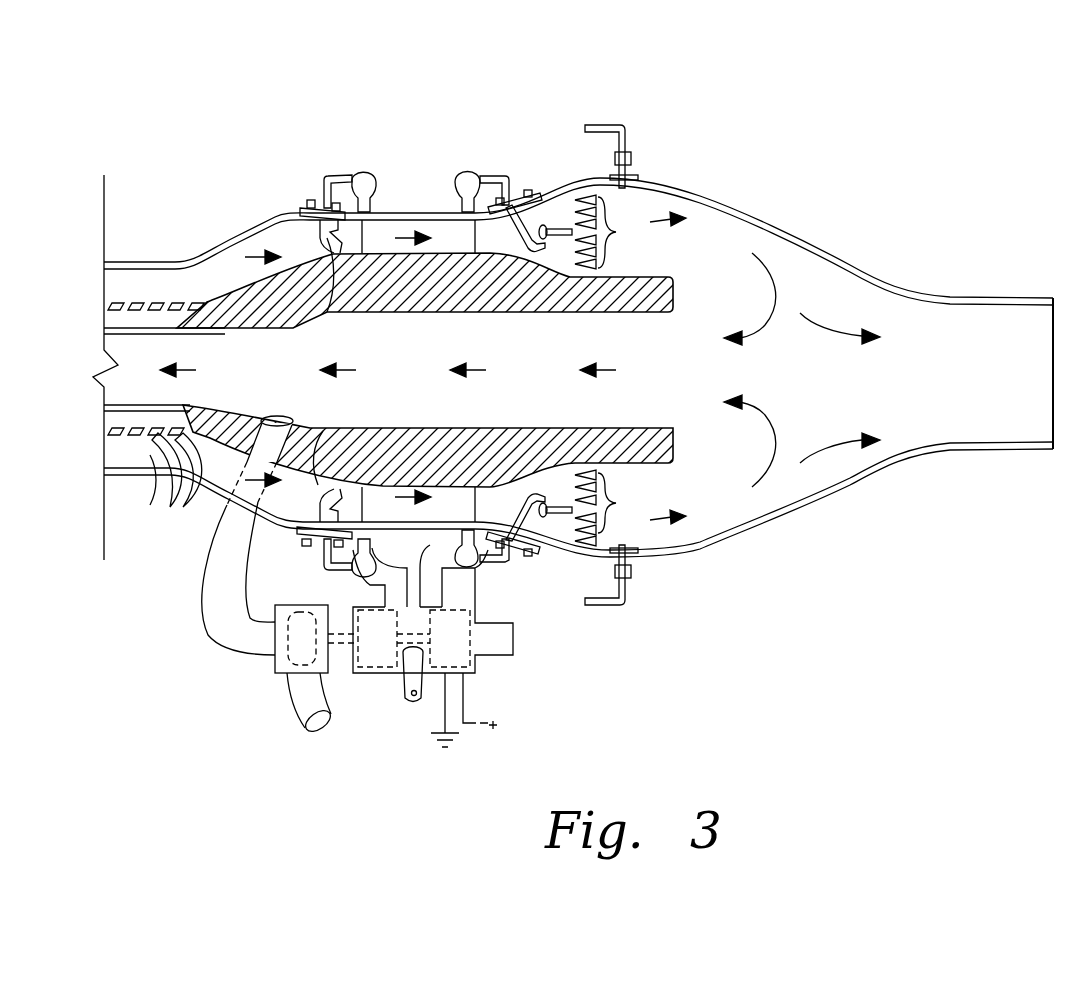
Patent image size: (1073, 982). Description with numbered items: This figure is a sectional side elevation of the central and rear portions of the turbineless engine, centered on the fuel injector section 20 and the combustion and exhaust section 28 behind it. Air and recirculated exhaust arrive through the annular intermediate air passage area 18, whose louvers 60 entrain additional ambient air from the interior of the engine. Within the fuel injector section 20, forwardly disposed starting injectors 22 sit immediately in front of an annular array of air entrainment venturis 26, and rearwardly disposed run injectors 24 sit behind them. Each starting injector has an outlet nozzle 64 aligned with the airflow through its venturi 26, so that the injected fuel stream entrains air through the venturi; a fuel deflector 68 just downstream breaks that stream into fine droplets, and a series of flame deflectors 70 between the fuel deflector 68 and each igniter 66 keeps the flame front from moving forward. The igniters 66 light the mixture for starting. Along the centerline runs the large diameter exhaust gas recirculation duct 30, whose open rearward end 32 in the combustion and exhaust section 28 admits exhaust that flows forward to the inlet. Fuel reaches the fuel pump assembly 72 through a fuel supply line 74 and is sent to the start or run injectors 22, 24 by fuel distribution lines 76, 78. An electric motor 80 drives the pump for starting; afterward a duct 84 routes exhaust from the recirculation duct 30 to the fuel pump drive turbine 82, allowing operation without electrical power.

The annular intermediate air passage area 18 is at (195, 250).
The fuel injector section 20 is at (440, 106).
The starting injectors 22 is at (340, 176).
The run injectors 24 is at (497, 175).
The air entrainment venturis 26 is at (398, 212).
The combustion and exhaust section 28 is at (700, 183).
The exhaust gas recirculation duct 30 is at (404, 383).
The rearward end 32 is at (677, 380).
The louvers 60 is at (190, 500).
The outlet nozzle 64 is at (327, 312).
The igniters 66 is at (628, 128).
The fuel deflector 68 is at (557, 238).
The flame deflectors 70 is at (616, 232).
The fuel pump assembly 72 is at (367, 690).
The fuel supply line 74 is at (520, 627).
The fuel distribution line 76 is at (360, 578).
The fuel distribution line 78 is at (443, 582).
The electric motor 80 is at (478, 662).
The fuel pump drive turbine 82 is at (275, 665).
The duct 84 is at (203, 607).